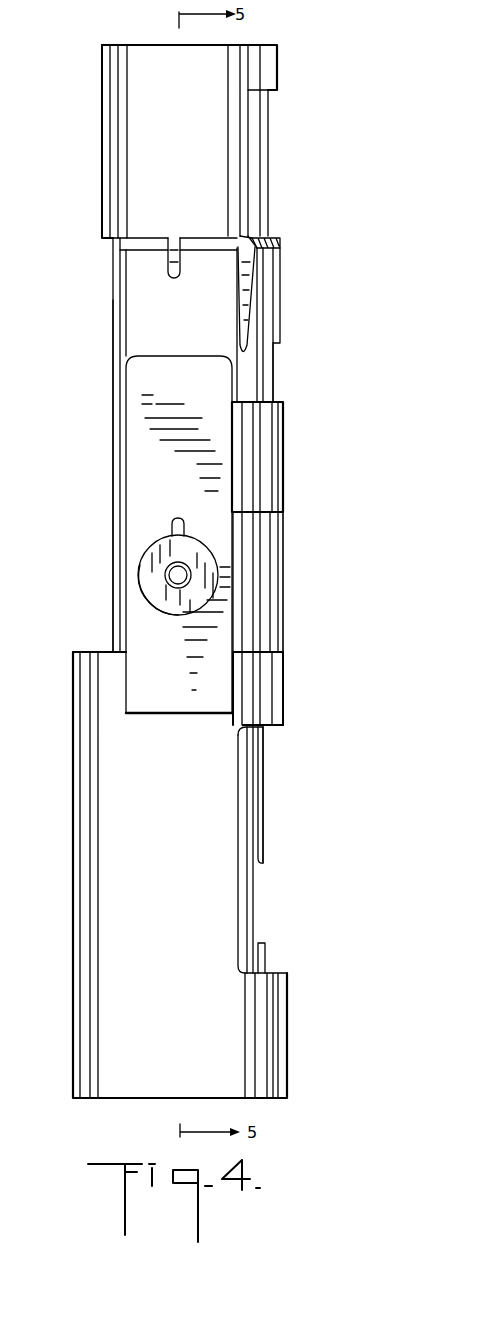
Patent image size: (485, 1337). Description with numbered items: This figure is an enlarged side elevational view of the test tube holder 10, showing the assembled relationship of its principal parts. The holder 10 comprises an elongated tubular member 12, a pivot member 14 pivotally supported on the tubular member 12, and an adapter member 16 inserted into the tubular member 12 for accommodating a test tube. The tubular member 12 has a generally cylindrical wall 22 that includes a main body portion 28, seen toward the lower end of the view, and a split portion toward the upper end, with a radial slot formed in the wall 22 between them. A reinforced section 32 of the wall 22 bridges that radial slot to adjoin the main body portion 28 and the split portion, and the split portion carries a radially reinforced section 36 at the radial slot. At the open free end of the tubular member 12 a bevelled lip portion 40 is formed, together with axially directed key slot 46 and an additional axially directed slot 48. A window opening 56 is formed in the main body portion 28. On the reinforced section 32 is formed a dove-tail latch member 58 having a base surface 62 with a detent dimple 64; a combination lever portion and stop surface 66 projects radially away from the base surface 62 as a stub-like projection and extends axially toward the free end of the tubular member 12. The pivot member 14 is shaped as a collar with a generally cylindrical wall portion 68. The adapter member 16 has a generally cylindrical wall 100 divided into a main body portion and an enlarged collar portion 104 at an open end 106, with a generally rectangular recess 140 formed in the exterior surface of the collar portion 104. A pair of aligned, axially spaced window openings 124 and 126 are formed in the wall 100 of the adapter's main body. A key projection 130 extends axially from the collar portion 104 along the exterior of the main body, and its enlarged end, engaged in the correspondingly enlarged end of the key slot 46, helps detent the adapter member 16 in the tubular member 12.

The test tube holder 10 is at (332, 103).
The tubular member 12 is at (282, 303).
The pivot member 14 is at (290, 616).
The adapter member 16 is at (96, 203).
The cylindrical wall 22 is at (73, 913).
The main body portion 28 is at (187, 832).
The reinforced section 32 is at (190, 477).
The radially reinforced section 36 is at (283, 457).
The bevelled lip portion 40 is at (275, 233).
The key slot 46 is at (166, 262).
The axially directed slot 48 is at (244, 270).
The window opening 56 is at (272, 726).
The dove-tail latch member 58 is at (142, 609).
The base surface 62 is at (145, 561).
The detent dimple 64 is at (170, 580).
The combination lever portion and stop surface 66 is at (178, 518).
The cylindrical wall portion 68 is at (284, 568).
The cylindrical wall 100 is at (113, 458).
The enlarged collar portion 104 is at (102, 152).
The open end 106 is at (133, 43).
The window opening 124 is at (268, 364).
The window opening 126 is at (256, 917).
The key projection 130 is at (168, 278).
The rectangular recess 140 is at (280, 151).